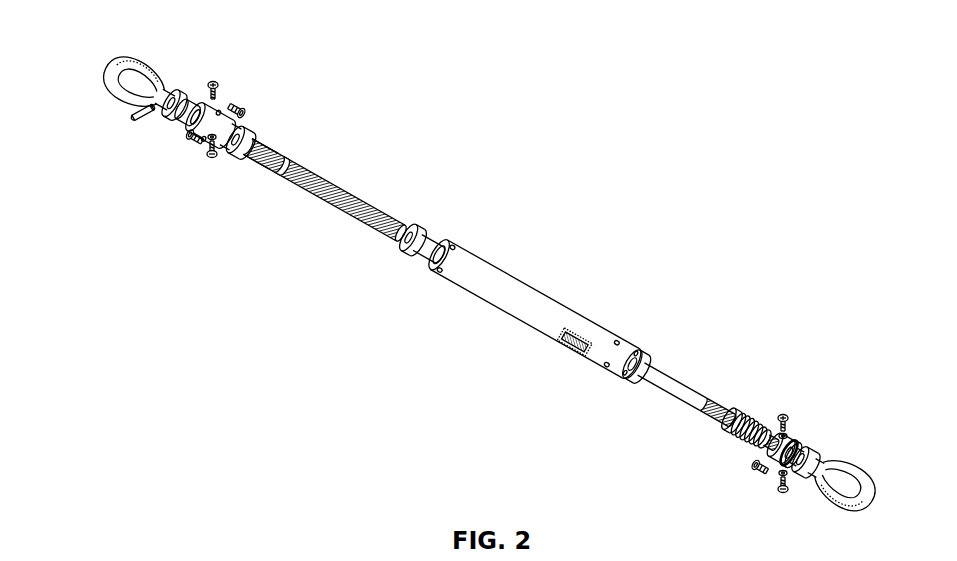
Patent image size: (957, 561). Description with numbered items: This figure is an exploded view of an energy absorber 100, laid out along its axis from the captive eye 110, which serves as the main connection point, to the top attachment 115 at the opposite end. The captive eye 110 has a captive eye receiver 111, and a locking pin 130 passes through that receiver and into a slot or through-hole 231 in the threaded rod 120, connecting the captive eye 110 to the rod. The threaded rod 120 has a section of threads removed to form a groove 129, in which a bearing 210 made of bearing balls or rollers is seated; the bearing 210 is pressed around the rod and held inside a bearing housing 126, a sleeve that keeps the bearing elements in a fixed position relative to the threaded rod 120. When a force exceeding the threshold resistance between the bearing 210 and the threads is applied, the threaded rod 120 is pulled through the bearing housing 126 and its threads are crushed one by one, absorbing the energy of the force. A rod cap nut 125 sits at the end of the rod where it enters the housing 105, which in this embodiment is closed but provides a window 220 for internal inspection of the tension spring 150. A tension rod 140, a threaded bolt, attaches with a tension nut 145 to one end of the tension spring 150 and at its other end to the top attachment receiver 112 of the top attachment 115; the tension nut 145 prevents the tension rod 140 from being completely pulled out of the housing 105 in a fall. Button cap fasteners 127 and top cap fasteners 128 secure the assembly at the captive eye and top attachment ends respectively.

The energy absorber 100 is at (546, 151).
The housing 105 is at (505, 270).
The captive eye 110 is at (120, 53).
The captive eye receiver 111 is at (152, 92).
The top attachment receiver 112 is at (815, 472).
The top attachment 115 is at (843, 458).
The threaded rod 120 is at (342, 185).
The rod cap nut 125 is at (435, 230).
The bearing housing 126 is at (220, 110).
The button cap fasteners 127 is at (207, 85).
The top cap fasteners 128 is at (787, 408).
The groove 129 is at (285, 155).
The locking pin 130 is at (134, 120).
The tension rod 140 is at (668, 372).
The tension nut 145 is at (640, 357).
The tension spring 150 is at (737, 408).
The bearing 210 is at (233, 123).
The window 220 is at (573, 360).
The through-hole 231 is at (258, 163).